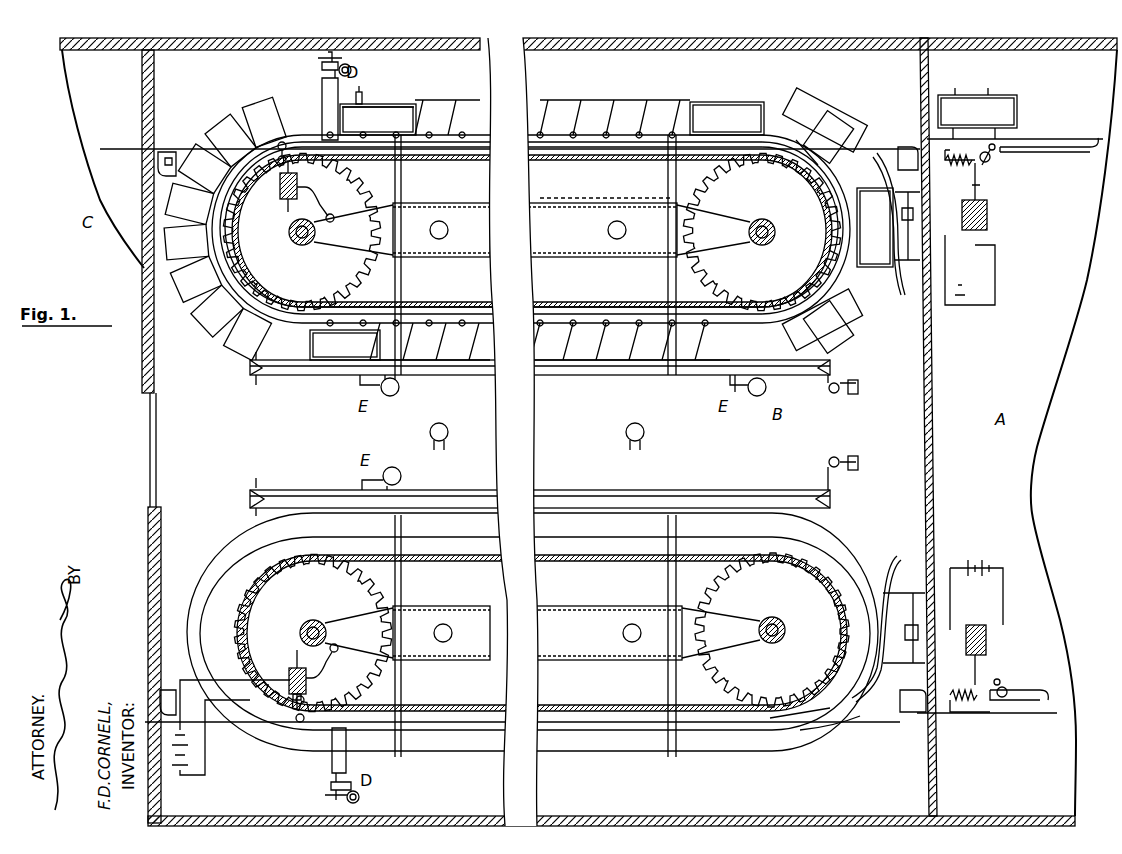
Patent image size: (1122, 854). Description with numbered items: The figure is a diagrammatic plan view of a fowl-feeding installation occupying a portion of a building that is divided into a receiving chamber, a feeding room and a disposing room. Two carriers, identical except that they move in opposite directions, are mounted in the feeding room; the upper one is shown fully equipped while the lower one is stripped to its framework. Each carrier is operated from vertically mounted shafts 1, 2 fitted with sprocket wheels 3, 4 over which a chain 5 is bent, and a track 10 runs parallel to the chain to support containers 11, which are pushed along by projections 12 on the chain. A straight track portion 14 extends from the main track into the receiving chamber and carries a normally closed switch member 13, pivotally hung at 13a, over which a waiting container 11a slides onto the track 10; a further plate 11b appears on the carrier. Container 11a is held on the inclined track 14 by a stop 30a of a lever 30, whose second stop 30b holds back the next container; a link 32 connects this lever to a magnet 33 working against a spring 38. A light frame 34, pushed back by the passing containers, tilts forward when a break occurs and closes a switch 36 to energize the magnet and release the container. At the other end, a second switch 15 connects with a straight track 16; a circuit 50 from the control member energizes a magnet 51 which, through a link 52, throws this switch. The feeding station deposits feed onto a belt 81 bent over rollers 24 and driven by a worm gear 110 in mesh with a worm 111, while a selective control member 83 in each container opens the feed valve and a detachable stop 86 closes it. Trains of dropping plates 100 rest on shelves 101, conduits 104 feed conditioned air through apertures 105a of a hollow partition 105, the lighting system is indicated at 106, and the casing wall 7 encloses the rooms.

The shaft 1 is at (292, 238).
The shaft 2 is at (760, 246).
The sprocket wheel 3 is at (228, 403).
The sprocket wheel 4 is at (906, 300).
The chain 5 is at (620, 302).
The casing 7 is at (146, 366).
The track 10 is at (660, 325).
The container 11 is at (418, 104).
The container 11a is at (1020, 104).
The carrier plate 11b is at (832, 120).
The projection 12 is at (592, 150).
The switch member 13 is at (800, 145).
The pivot 13a is at (850, 722).
The straight track portion 14 is at (1070, 139).
The second switch 15 is at (278, 145).
The straight track 16 is at (170, 152).
The roller 24 is at (840, 368).
The lever 30 is at (1000, 160).
The stop 30a is at (948, 147).
The second stop 30b is at (1052, 152).
The link 32 is at (980, 175).
The magnet 33 is at (1000, 215).
The light frame 34 is at (905, 298).
The switch 36 is at (912, 262).
The spring 38 is at (956, 427).
The circuit 50 is at (222, 730).
The magnet 51 is at (280, 195).
The link 52 is at (308, 690).
The belt 81 is at (478, 378).
The selective control member 83 is at (358, 110).
The detachable stop 86 is at (390, 104).
The dropping plates 100 is at (636, 105).
The shelves 101 is at (400, 190).
The conduit 104 is at (448, 231).
The hollow partition 105 is at (497, 257).
The aperture 105a is at (612, 203).
The lighting system 106 is at (537, 427).
The worm gear 110 is at (836, 392).
The worm 111 is at (848, 392).